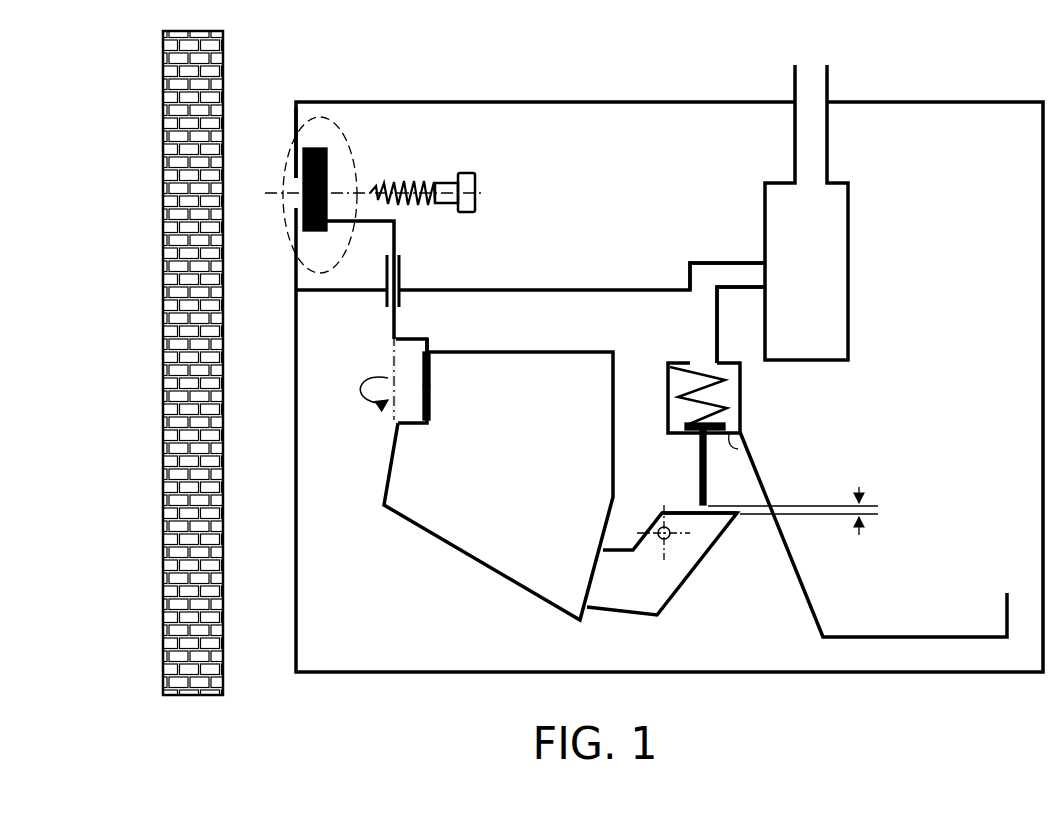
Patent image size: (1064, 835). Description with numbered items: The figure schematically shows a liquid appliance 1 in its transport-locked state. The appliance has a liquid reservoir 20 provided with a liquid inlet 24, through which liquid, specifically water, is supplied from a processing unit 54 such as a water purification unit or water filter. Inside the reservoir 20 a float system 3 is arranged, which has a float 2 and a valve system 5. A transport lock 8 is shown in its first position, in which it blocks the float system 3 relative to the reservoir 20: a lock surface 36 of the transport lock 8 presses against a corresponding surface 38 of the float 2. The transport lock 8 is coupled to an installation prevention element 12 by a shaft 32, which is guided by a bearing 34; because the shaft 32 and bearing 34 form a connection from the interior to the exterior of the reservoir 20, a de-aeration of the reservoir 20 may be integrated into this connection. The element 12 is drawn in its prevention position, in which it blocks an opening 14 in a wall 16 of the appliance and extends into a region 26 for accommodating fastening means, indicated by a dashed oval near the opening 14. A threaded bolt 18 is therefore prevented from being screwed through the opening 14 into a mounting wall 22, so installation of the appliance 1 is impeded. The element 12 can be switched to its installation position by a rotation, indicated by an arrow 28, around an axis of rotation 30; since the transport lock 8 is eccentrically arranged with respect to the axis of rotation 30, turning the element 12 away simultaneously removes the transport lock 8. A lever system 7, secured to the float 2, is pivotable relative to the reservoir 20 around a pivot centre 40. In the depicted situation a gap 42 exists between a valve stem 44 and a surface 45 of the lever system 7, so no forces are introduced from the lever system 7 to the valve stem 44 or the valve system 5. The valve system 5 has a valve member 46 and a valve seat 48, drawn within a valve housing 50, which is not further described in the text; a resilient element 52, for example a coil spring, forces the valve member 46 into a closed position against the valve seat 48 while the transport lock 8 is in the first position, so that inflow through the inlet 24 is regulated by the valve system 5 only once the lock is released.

The liquid appliance 1 is at (500, 70).
The float 2 is at (432, 534).
The float system 3 is at (458, 585).
The valve system 5 is at (660, 338).
The lever system 7 is at (708, 600).
The transport lock 8 is at (429, 342).
The installation prevention element 12 is at (328, 152).
The opening 14 is at (292, 190).
The wall 16 is at (296, 122).
The threaded bolt 18 is at (444, 172).
The liquid reservoir 20 is at (600, 288).
The wall 22 is at (163, 192).
The liquid inlet 24 is at (703, 278).
The region 26 is at (330, 118).
The arrow 28 is at (360, 390).
The axis of rotation 30 is at (393, 345).
The shaft 32 is at (397, 230).
The bearing 34 is at (403, 270).
The lock surface 36 is at (431, 372).
The corresponding surface 38 is at (431, 412).
The pivot centre 40 is at (658, 540).
The gap 42 is at (793, 498).
The valve stem 44 is at (708, 490).
The surface 45 is at (678, 512).
The valve member 46 is at (686, 420).
The valve seat 48 is at (740, 443).
The cylinder 50 is at (741, 398).
The resilient element 52 is at (680, 383).
The processing unit 54 is at (850, 273).